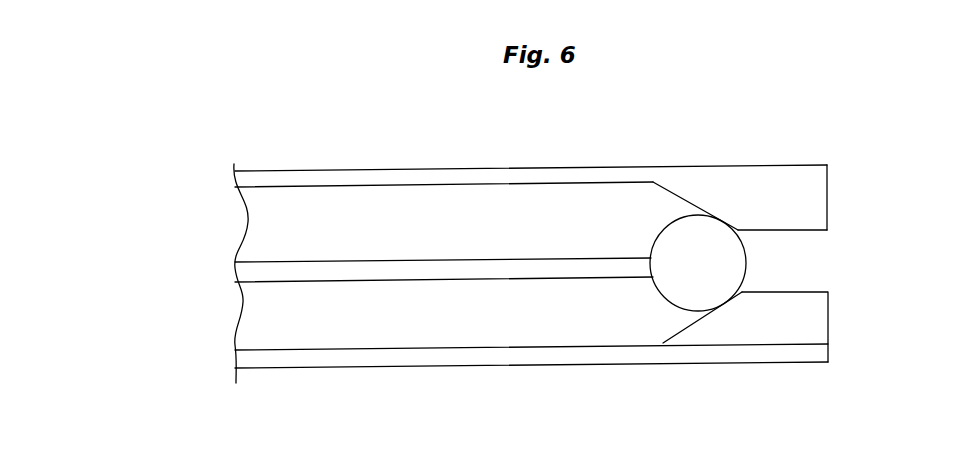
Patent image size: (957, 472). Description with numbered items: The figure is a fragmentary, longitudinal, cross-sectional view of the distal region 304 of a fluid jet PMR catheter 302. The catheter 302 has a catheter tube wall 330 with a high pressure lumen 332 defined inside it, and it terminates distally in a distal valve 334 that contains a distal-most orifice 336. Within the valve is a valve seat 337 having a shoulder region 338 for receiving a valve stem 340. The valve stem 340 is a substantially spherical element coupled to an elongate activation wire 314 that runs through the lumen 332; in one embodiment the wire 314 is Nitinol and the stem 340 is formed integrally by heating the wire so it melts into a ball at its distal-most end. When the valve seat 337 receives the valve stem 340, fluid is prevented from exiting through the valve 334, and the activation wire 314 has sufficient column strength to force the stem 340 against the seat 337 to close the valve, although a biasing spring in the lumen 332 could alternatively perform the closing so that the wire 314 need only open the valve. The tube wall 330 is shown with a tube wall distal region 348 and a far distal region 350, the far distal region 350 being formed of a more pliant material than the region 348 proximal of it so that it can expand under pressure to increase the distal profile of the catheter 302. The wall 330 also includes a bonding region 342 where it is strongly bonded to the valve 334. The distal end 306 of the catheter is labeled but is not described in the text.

The catheter 302 is at (340, 145).
The distal region 304 is at (397, 170).
The end of upper substrate 306 is at (828, 165).
The activation wire 314 is at (478, 273).
The catheter tube wall 330 is at (495, 175).
The high pressure lumen 332 is at (533, 203).
The distal valve 334 is at (810, 204).
The distal-most orifice 336 is at (797, 258).
The valve seat 337 is at (667, 328).
The shoulder region 338 is at (667, 333).
The valve stem 340 is at (658, 287).
The bonding region 342 is at (810, 343).
The tube wall distal region 348 is at (338, 361).
The far distal region 350 is at (622, 357).